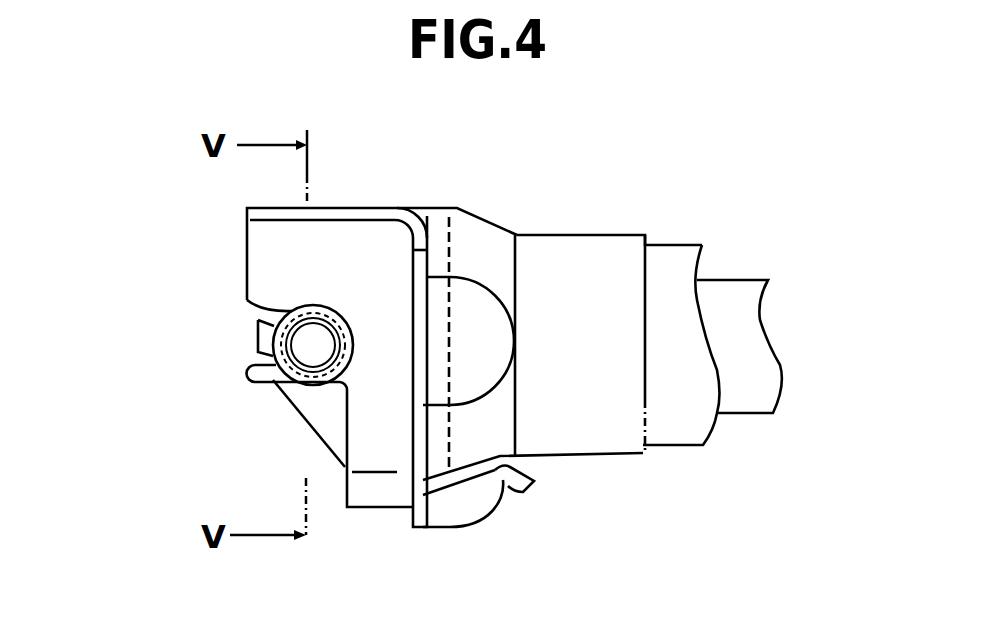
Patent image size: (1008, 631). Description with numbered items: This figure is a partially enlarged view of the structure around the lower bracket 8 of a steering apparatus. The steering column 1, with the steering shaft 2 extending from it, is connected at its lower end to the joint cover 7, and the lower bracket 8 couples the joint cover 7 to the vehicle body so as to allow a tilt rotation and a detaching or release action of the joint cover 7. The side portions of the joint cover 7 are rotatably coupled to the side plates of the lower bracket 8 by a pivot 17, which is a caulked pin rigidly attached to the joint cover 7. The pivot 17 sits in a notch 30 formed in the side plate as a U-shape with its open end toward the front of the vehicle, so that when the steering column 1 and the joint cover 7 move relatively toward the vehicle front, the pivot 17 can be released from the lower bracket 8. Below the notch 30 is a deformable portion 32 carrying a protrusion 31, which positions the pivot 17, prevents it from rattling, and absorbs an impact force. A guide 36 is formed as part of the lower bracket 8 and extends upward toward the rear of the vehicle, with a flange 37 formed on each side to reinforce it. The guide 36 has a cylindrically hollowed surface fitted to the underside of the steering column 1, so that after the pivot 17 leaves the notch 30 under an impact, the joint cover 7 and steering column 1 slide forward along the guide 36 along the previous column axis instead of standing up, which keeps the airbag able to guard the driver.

The steering column 1 is at (670, 430).
The steering shaft 2 is at (742, 318).
The joint cover 7 is at (567, 235).
The lower bracket 8 is at (426, 217).
The pivot 17 is at (305, 352).
The notch 30 is at (257, 333).
The protrusion 31 is at (250, 353).
The deformable portion 32 is at (250, 377).
The guide 36 is at (518, 490).
The flange 37 is at (462, 510).